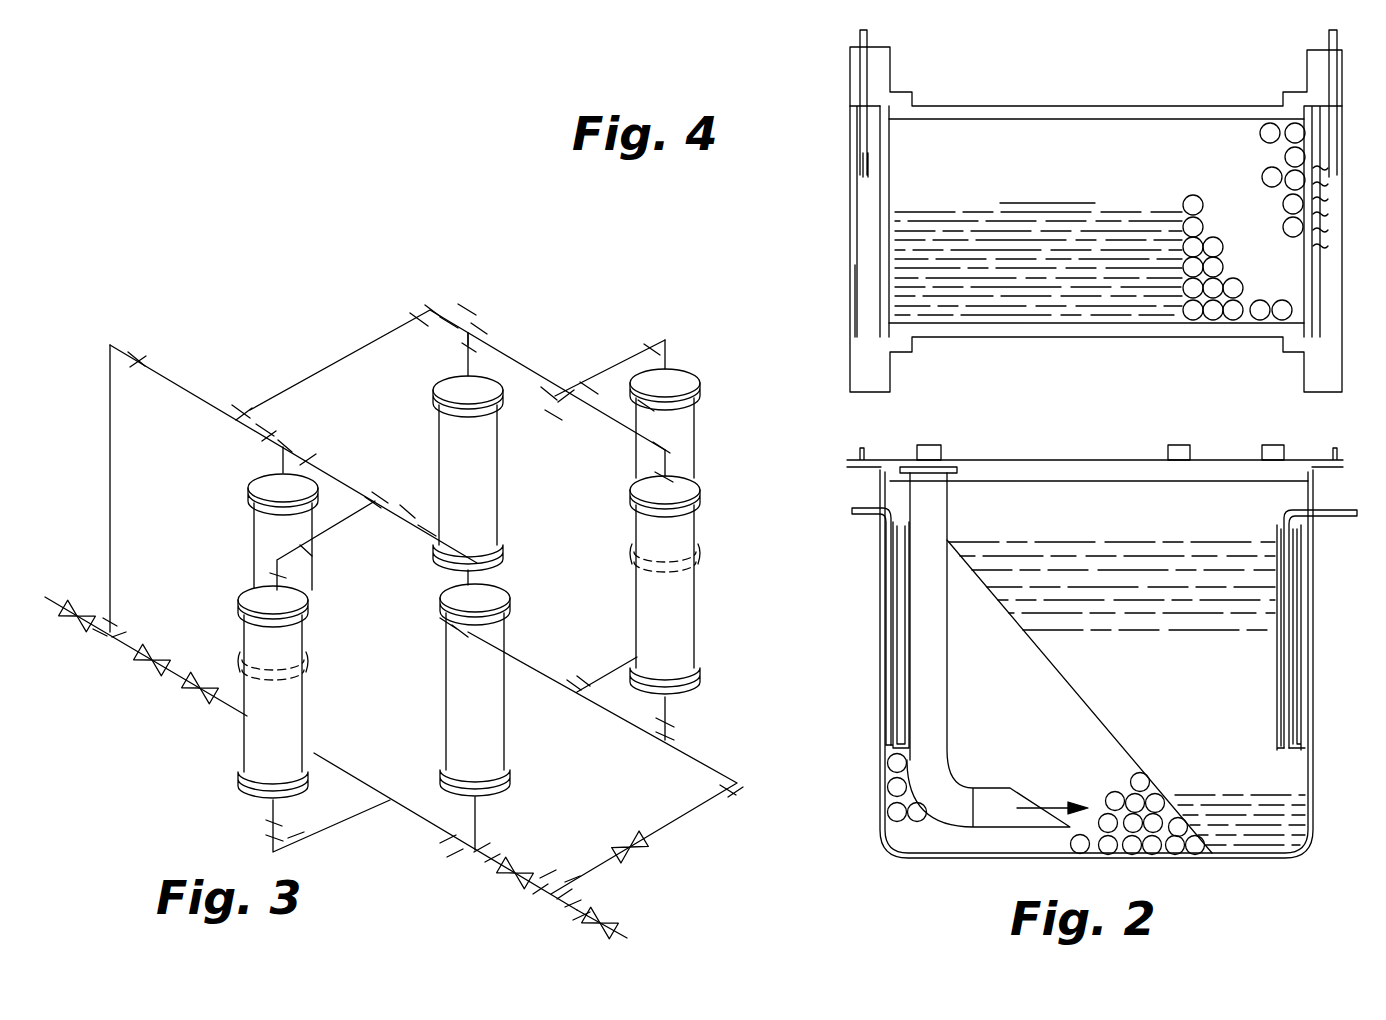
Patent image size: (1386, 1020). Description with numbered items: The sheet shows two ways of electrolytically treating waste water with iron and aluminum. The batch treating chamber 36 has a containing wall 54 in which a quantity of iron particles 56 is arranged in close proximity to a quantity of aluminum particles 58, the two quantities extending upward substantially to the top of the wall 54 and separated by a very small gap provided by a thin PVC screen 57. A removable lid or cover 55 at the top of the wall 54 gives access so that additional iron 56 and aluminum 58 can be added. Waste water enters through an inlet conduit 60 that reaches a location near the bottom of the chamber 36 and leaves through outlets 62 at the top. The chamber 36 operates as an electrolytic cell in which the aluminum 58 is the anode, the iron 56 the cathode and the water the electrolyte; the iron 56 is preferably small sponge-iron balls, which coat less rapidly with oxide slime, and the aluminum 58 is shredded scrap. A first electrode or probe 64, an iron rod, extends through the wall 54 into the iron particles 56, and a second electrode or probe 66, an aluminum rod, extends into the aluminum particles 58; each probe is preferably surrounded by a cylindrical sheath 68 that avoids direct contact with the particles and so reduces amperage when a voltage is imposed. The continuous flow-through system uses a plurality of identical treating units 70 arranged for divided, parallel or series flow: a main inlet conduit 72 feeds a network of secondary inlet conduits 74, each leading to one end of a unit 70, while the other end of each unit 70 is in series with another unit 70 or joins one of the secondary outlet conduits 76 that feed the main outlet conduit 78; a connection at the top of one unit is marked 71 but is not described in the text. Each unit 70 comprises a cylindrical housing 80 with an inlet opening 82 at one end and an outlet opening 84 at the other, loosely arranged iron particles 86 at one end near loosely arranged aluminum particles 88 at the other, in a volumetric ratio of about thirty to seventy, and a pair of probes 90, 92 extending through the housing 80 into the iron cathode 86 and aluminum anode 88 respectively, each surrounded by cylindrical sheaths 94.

In FIG. 2, the treating chamber 36 is at (1320, 659).
In FIG. 2, the containing wall 54 is at (1314, 779).
In FIG. 2, the lid or cover 55 is at (1030, 461).
In FIG. 2, the iron particles 56 is at (1110, 790).
In FIG. 2, the PVC screen 57 is at (1065, 682).
In FIG. 2, the aluminum particles 58 is at (1178, 643).
In FIG. 2, the inlet conduit 60 is at (944, 516).
In FIG. 2, the outlets 62 is at (1186, 450).
In FIG. 2, the first electrode or probe 64 is at (860, 514).
In FIG. 2, the second electrode or probe 66 is at (1326, 517).
In FIG. 2, the cylindrical sheath 68 is at (887, 702).
In FIG. 4, the treating units 70 is at (1354, 288).
In FIG. 3, the treating units 70 is at (310, 571).
In FIG. 3, the inlet connection 71 is at (466, 338).
In FIG. 3, the main inlet conduit 72 is at (628, 938).
In FIG. 3, the secondary inlet conduits 74 is at (528, 658).
In FIG. 3, the secondary outlet conduits 76 is at (283, 462).
In FIG. 3, the main outlet conduit 78 is at (50, 600).
In FIG. 4, the cylindrical housing 80 is at (1090, 104).
In FIG. 4, the inlet opening 82 is at (1338, 193).
In FIG. 4, the outlet opening 84 is at (851, 186).
In FIG. 4, the iron particles 86 is at (1193, 195).
In FIG. 4, the aluminum particles 88 is at (1108, 212).
In FIG. 4, the probe 90 is at (1340, 83).
In FIG. 4, the probe 92 is at (852, 58).
In FIG. 4, the cylindrical sheaths 94 is at (890, 174).